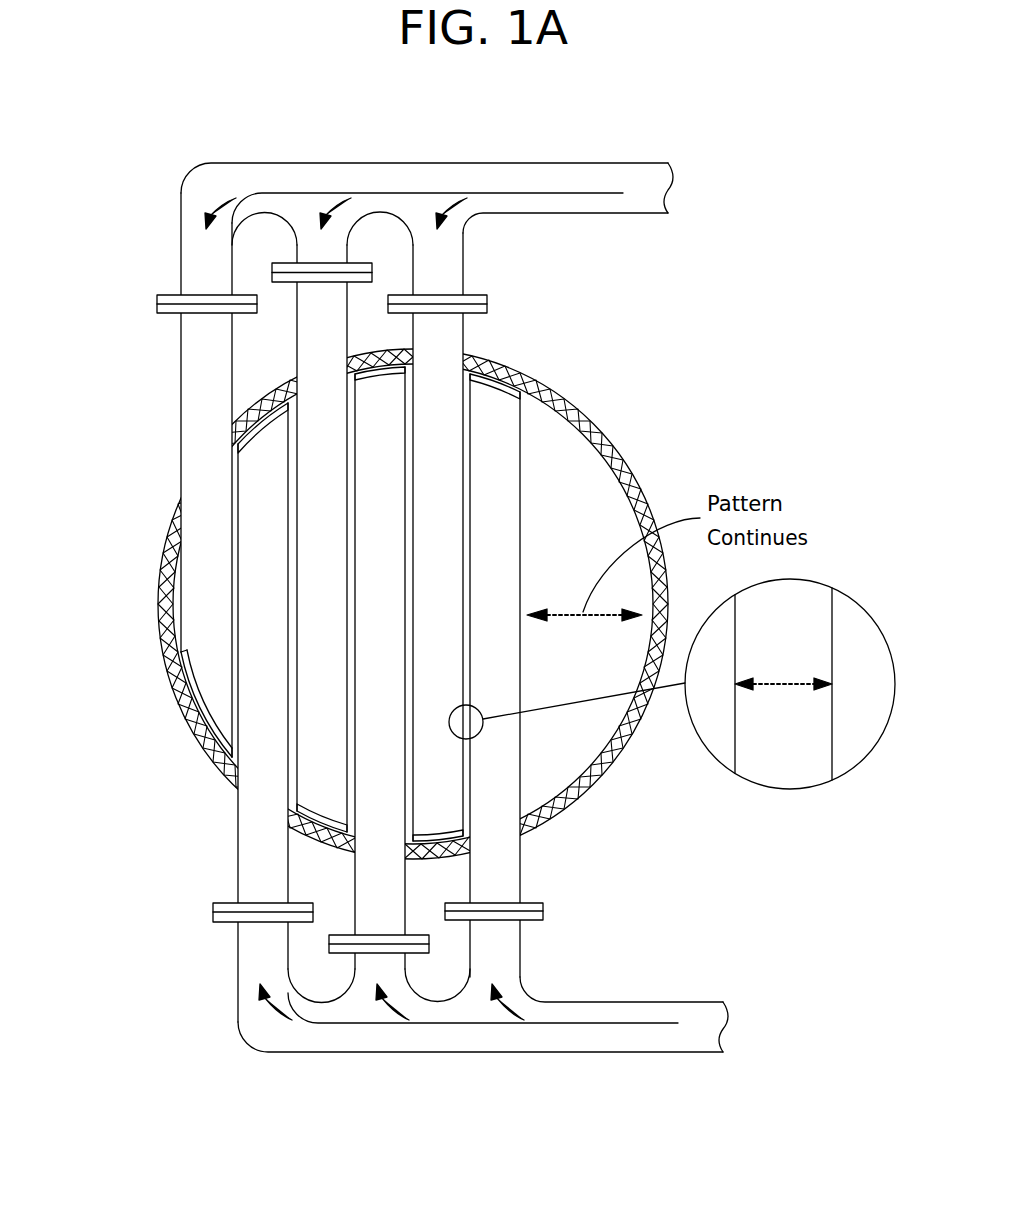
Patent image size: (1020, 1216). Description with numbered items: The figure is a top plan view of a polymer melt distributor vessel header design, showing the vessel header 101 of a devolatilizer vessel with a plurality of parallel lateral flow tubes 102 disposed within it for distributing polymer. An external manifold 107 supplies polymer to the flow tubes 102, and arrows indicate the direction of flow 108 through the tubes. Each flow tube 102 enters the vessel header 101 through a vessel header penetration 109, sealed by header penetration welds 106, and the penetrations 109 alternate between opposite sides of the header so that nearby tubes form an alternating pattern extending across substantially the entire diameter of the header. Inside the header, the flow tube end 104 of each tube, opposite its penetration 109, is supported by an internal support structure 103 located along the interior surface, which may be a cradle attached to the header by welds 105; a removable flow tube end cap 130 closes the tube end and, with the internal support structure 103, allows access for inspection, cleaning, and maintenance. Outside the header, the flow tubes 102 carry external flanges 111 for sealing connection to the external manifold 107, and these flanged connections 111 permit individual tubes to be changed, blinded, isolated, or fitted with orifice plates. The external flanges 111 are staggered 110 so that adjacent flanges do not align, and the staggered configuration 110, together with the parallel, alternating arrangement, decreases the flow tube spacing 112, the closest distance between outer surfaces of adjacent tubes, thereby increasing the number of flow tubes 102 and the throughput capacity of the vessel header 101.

The vessel header 101 is at (622, 483).
The lateral flow tube 102 is at (520, 480).
The internal support structure 103 is at (508, 395).
The flow tube end 104 is at (225, 697).
The weld 105 is at (498, 363).
The header penetration weld 106 is at (227, 783).
The external manifold 107 is at (281, 163).
The direction of flow 108 is at (395, 193).
The vessel header penetration 109 is at (210, 482).
The staggered configuration 110 is at (530, 903).
The external flange 111 is at (158, 314).
The flow tube spacing 112 is at (790, 680).
The flow tube end cap 130 is at (190, 703).